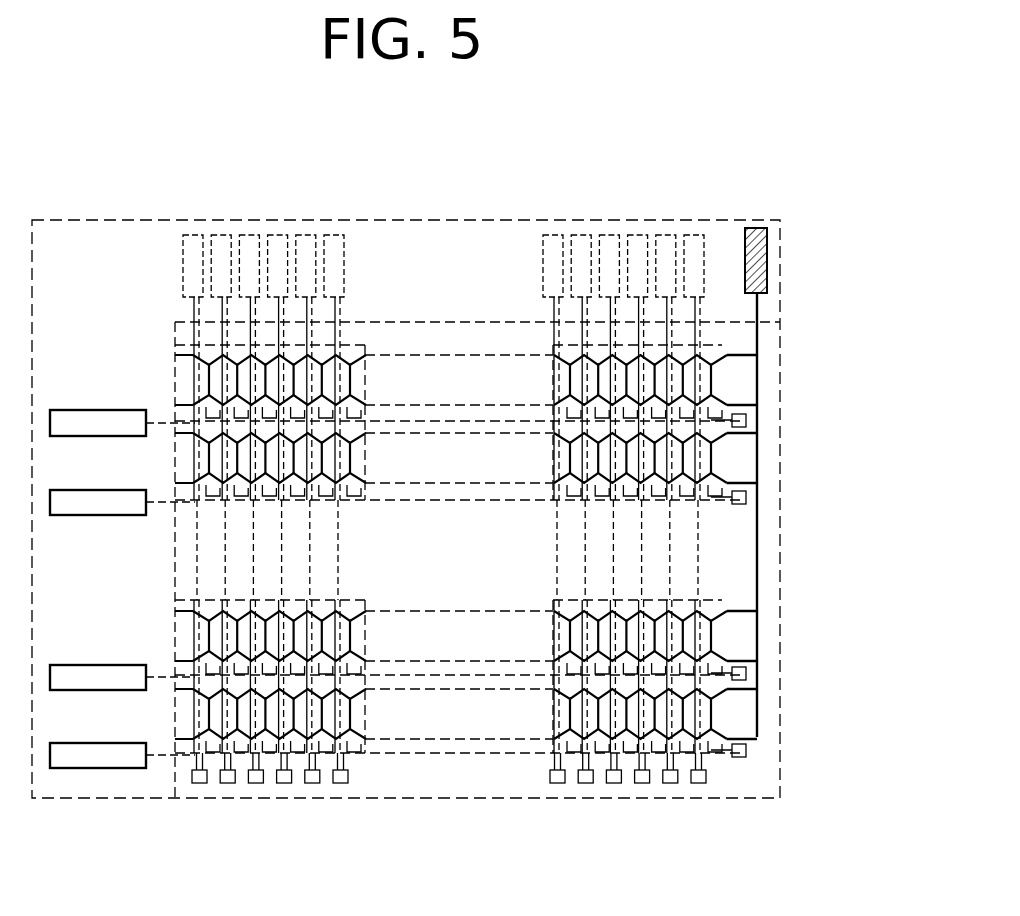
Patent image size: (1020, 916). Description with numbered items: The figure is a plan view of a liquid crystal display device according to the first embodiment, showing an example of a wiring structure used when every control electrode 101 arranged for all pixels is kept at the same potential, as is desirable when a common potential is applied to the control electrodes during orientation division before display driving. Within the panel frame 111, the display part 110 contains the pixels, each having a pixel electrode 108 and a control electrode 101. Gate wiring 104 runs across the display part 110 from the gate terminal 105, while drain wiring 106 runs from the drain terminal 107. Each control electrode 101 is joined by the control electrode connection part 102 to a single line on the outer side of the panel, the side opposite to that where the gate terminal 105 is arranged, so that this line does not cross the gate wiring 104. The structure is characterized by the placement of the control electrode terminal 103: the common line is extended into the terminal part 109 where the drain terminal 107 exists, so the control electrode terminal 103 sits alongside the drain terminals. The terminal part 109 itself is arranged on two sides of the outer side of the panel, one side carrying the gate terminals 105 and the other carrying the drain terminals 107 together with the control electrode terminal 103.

The control electrode 101 is at (712, 375).
The control electrode connection part 102 is at (757, 556).
The control electrode terminal 103 is at (767, 254).
The gate wiring 104 is at (717, 753).
The gate terminal 105 is at (96, 768).
The drain wiring 106 is at (700, 346).
The drain terminal 107 is at (340, 250).
The pixel electrode 108 is at (722, 452).
The terminal part 109 is at (118, 248).
The display part 110 is at (474, 345).
The panel frame 111 is at (640, 218).